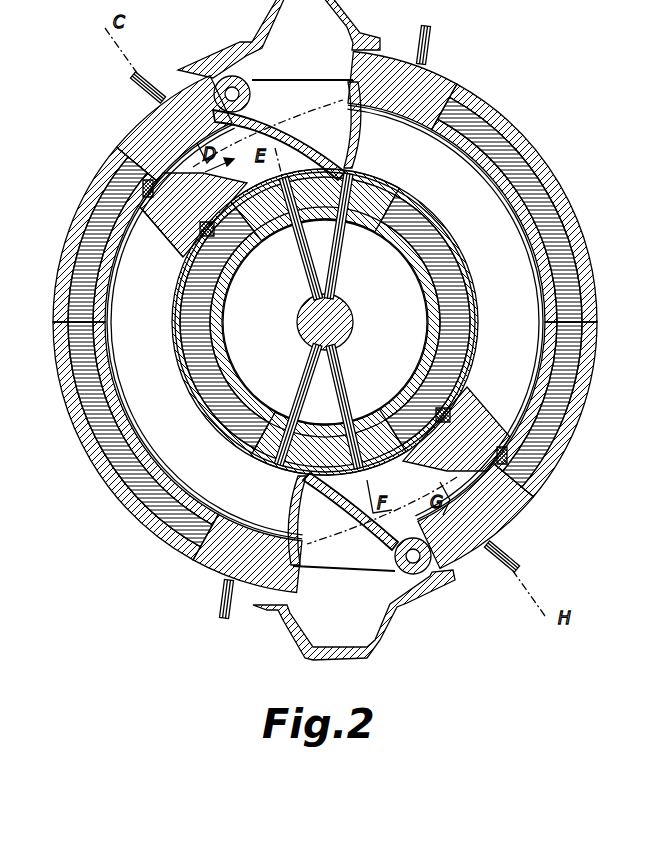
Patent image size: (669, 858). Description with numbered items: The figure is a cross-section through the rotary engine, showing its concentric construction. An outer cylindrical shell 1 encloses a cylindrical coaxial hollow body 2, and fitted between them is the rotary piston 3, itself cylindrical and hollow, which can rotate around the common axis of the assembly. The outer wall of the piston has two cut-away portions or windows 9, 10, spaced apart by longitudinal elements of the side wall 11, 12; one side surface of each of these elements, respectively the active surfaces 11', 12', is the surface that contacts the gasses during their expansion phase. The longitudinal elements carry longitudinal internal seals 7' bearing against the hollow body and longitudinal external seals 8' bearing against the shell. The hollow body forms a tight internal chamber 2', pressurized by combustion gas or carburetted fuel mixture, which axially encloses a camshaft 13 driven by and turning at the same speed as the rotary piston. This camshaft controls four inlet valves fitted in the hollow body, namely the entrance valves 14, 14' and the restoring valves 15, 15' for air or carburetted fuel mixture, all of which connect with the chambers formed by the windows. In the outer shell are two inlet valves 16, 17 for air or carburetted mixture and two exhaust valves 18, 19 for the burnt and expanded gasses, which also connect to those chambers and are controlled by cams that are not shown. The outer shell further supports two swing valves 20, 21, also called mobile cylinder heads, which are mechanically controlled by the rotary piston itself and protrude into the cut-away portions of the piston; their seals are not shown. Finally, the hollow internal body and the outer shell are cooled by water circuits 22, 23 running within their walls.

The outer cylindrical shell 1 is at (534, 162).
The hollow body 2 is at (339, 322).
The internal chamber 2' is at (325, 322).
The rotary piston 3 is at (165, 212).
The longitudinal internal seals 7' is at (320, 339).
The longitudinal external seals 8' is at (319, 326).
The window 9 is at (558, 254).
The window 10 is at (108, 486).
The longitudinal element of the side wall 11 is at (160, 134).
The active surface 11' is at (167, 260).
The longitudinal element of the side wall 12 is at (516, 498).
The active surface 12' is at (473, 389).
The camshaft 13 is at (300, 328).
The entrance valve 14 is at (293, 239).
The entrance valve 14' is at (359, 406).
The restoring valve 15 is at (357, 236).
The restoring valve 15' is at (289, 404).
The inlet valve 16 is at (433, 44).
The inlet valve 17 is at (219, 608).
The exhaust valve 18 is at (142, 88).
The exhaust valve 19 is at (516, 559).
The swing valve 20 is at (289, 145).
The swing valve 21 is at (350, 518).
The water circuit 22 is at (194, 348).
The water circuit 23 is at (90, 425).